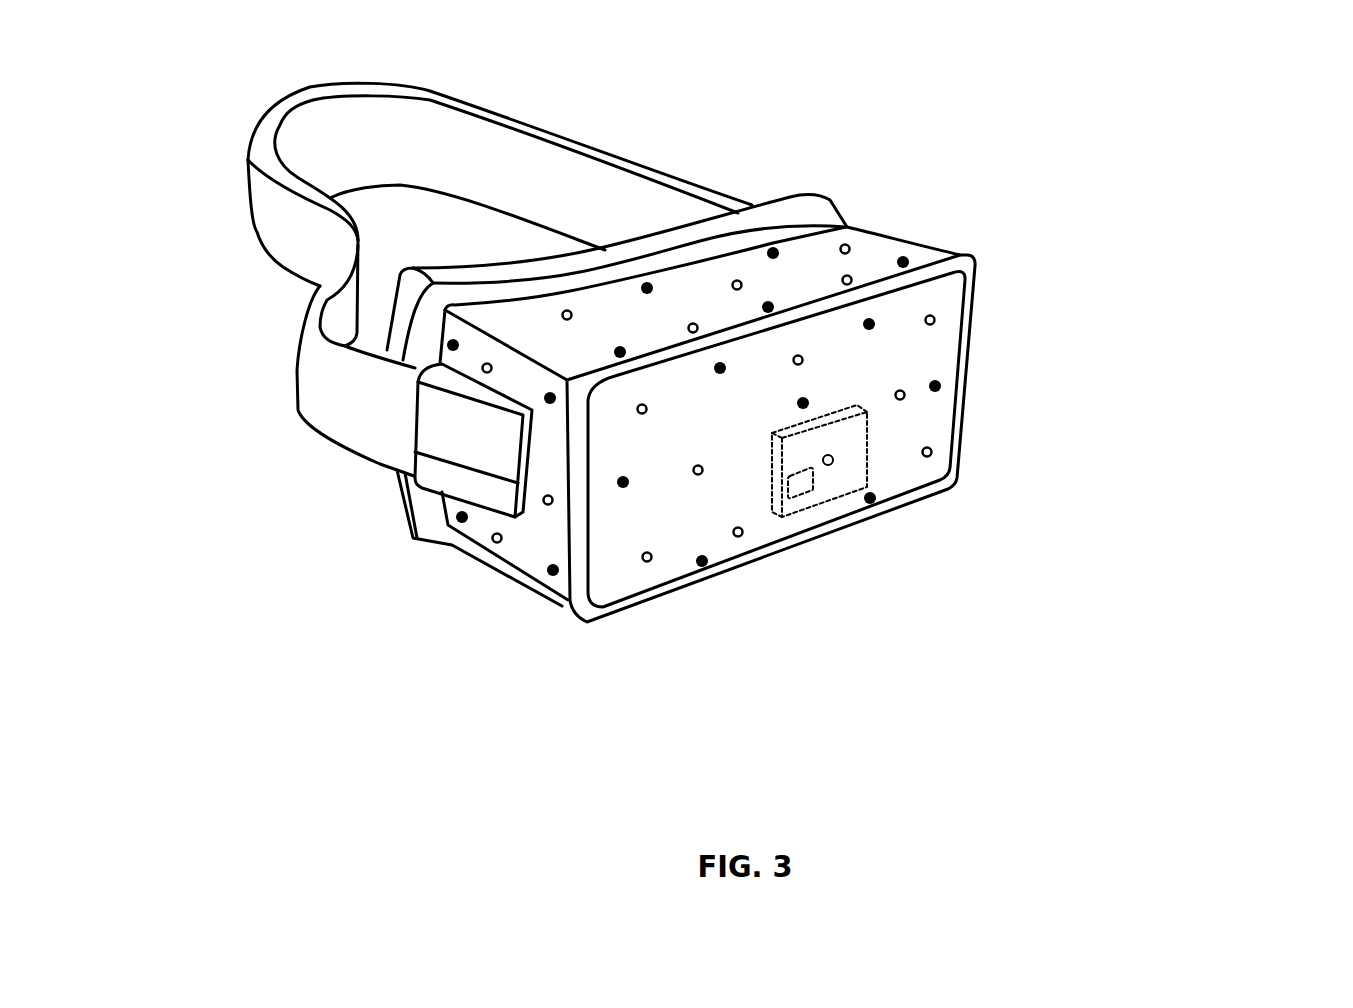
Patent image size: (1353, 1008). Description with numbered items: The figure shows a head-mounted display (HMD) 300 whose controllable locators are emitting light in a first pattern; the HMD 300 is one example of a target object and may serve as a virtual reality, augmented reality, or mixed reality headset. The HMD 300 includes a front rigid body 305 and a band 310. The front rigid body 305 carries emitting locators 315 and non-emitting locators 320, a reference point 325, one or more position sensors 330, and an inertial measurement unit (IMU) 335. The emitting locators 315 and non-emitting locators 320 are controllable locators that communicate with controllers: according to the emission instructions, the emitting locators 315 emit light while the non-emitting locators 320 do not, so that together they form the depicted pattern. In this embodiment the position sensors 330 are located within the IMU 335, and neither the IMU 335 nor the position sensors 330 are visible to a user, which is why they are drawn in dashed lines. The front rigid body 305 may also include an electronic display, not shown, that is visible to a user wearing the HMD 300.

The head-mounted display (HMD) 300 is at (706, 414).
The front rigid body 305 is at (969, 252).
The band 310 is at (617, 155).
The emitting locators 315 is at (553, 572).
The non-emitting locators 320 is at (495, 542).
The reference point 325 is at (833, 466).
The position sensors 330 is at (800, 488).
The inertial measurement unit (IMU) 335 is at (867, 460).